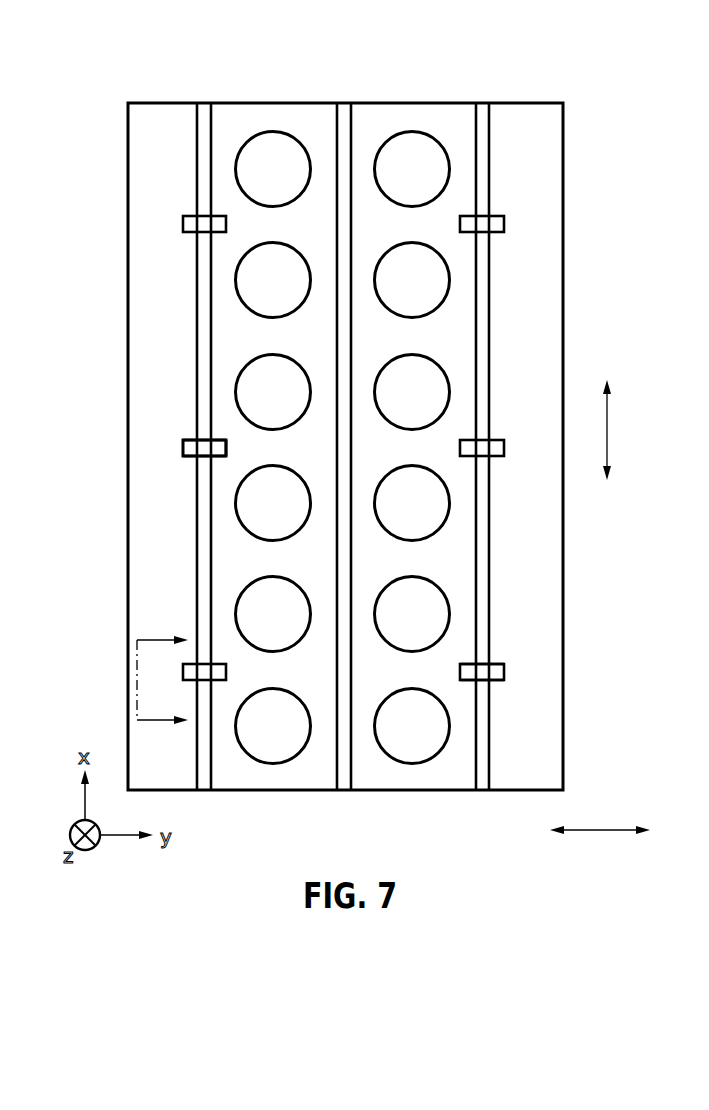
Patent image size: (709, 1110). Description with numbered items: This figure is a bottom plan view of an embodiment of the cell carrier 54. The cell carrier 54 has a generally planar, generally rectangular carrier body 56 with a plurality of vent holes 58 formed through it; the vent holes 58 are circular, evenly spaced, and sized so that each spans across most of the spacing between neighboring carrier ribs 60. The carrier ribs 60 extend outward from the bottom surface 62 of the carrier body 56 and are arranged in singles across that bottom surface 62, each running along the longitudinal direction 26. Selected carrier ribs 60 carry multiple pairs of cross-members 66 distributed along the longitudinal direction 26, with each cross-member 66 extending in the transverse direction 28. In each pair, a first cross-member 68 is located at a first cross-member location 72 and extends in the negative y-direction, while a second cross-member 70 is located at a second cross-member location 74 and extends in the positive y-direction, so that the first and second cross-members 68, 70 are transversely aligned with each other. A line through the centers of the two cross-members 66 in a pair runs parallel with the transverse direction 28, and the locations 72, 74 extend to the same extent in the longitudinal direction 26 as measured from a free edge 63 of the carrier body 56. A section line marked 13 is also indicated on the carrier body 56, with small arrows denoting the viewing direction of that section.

The cell carrier 54 is at (598, 78).
The carrier body 56 is at (442, 120).
The vent holes 58 is at (426, 520).
The carrier ribs 60 is at (229, 118).
The bottom surface 62 is at (536, 120).
The free edge 63 is at (167, 103).
The cross-members 66 is at (192, 216).
The first cross-member 68 is at (188, 456).
The second cross-member 70 is at (220, 456).
The first cross-member location 72 is at (168, 428).
The second cross-member location 74 is at (238, 462).
The longitudinal direction 26 is at (607, 421).
The transverse direction 28 is at (583, 832).
The section line 13 is at (162, 683).